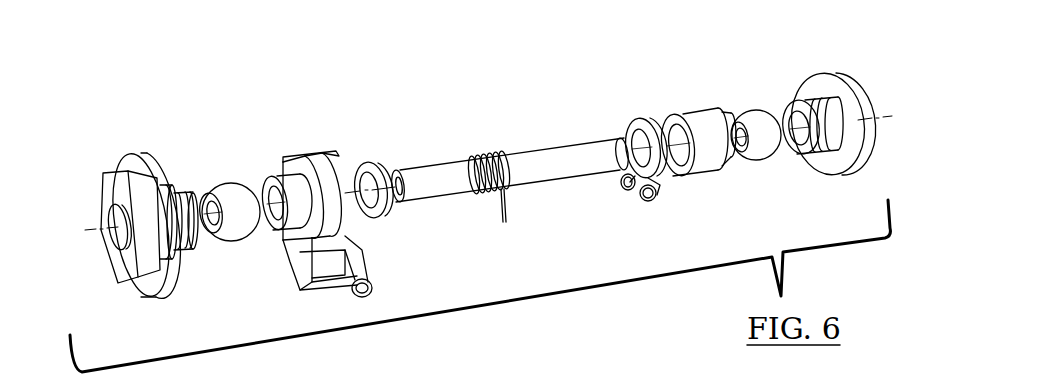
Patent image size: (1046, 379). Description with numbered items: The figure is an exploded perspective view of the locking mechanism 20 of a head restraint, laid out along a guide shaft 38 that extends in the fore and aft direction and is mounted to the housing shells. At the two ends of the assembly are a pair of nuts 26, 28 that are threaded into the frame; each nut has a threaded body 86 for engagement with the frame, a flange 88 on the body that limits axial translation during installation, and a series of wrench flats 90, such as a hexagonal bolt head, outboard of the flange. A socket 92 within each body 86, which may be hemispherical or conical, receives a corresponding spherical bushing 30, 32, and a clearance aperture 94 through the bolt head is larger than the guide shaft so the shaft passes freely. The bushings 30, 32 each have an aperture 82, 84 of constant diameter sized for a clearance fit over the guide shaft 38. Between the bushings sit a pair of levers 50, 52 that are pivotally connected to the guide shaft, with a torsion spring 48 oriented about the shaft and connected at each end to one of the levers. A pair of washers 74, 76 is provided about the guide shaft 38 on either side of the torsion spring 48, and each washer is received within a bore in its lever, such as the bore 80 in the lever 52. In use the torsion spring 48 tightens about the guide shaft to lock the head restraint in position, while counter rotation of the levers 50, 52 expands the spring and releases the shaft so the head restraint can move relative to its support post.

The locking mechanism 20 is at (553, 228).
The nut 26 is at (141, 194).
The nut 28 is at (825, 154).
The bushing 30 is at (227, 207).
The bushing 32 is at (749, 137).
The guide shaft 38 is at (568, 155).
The torsion spring 48 is at (478, 158).
The lever 50 is at (305, 150).
The lever 52 is at (688, 112).
The washer 74 is at (363, 163).
The washer 76 is at (641, 146).
The bore 80 is at (657, 198).
The aperture 82 is at (209, 234).
The aperture 84 is at (739, 150).
The threaded body 86 is at (170, 180).
The flange 88 is at (150, 153).
The wrench flats 90 is at (122, 219).
The socket 92 is at (803, 140).
The clearance aperture 94 is at (117, 246).